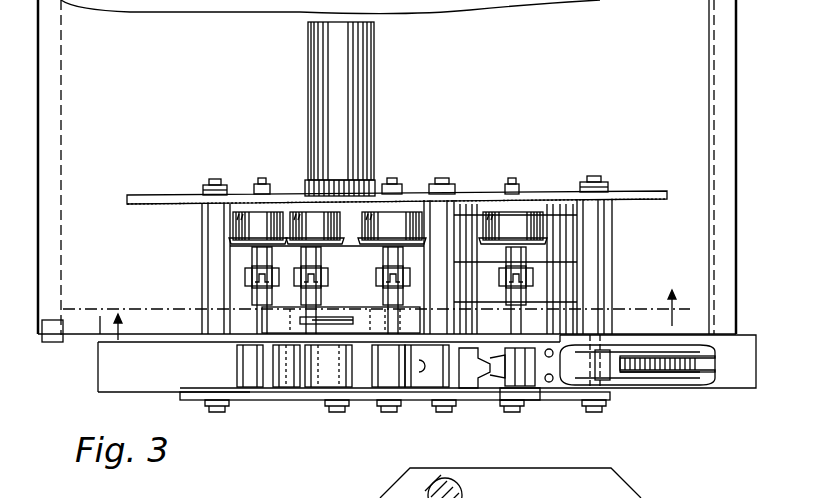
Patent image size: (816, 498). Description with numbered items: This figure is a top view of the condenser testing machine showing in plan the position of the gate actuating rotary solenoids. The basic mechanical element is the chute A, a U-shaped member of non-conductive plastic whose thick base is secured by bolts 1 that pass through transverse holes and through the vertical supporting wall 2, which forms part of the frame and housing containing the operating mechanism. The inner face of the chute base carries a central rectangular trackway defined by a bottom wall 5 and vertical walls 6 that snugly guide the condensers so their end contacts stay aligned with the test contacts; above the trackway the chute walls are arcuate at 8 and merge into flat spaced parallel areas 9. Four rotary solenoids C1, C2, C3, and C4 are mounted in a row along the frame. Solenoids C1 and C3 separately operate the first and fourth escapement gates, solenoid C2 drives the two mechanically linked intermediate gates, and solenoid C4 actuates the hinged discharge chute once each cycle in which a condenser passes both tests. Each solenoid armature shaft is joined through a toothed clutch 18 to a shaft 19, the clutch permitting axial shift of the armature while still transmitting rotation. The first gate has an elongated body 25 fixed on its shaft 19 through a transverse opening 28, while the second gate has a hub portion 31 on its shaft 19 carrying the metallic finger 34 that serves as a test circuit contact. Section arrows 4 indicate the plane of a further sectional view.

The bolts 1 is at (214, 182).
The vertical supporting wall 2 is at (92, 345).
The section line 4 is at (393, 313).
The bottom wall 5 is at (241, 306).
The vertical walls 6 is at (636, 345).
The arcuate chute walls 8 is at (660, 348).
The flat spaced parallel areas 9 is at (650, 386).
The toothed clutch 18 is at (534, 277).
The shaft 19 is at (402, 402).
The elongated body 25 is at (510, 388).
The transverse opening 28 is at (535, 395).
The hub portion 31 is at (378, 388).
The metallic finger 34 is at (480, 388).
The chute A is at (712, 390).
The rotary solenoid C1 is at (545, 205).
The rotary solenoid C2 is at (416, 208).
The rotary solenoid C3 is at (278, 210).
The rotary solenoid C4 is at (300, 210).